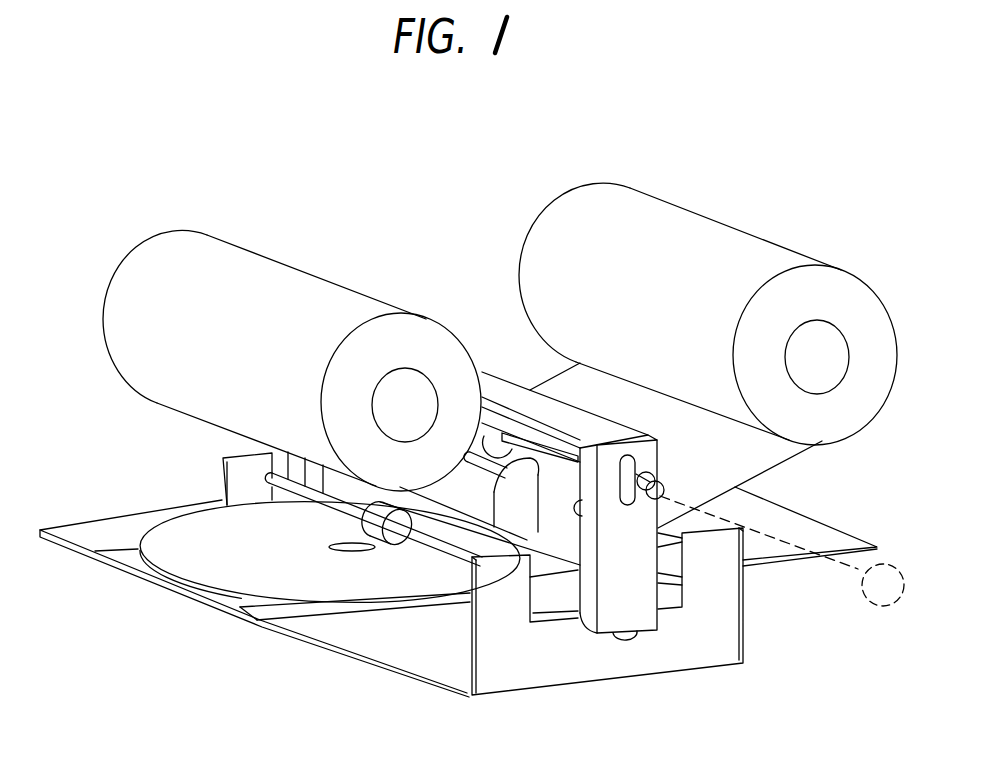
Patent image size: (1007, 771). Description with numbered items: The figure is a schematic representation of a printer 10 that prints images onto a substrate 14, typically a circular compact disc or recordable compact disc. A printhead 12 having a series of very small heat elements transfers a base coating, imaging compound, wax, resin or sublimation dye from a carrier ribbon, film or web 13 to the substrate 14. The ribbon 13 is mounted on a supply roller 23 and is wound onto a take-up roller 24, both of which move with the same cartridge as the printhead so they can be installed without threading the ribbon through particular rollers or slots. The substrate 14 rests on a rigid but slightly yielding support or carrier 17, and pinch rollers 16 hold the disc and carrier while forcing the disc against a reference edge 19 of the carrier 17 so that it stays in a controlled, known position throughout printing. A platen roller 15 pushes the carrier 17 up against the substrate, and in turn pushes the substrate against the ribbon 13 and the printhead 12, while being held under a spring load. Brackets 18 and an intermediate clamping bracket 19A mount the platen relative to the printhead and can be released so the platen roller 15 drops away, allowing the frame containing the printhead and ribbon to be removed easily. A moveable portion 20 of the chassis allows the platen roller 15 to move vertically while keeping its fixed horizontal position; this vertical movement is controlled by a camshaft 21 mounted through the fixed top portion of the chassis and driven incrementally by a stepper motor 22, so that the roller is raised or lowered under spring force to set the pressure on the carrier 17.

The printer 10 is at (445, 200).
The printhead 12 is at (523, 547).
The ribbon 13 is at (757, 467).
The substrate 14 is at (188, 528).
The platen roller 15 is at (563, 597).
The pinch rollers 16 is at (392, 538).
The carrier 17 is at (260, 612).
The brackets 18 is at (643, 618).
The reference edge 19 is at (138, 547).
The clamping bracket 19A is at (642, 620).
The moveable portion of the chassis 20 is at (528, 680).
The camshaft 21 is at (511, 383).
The stepper motor 22 is at (868, 607).
The supply roller 23 is at (405, 340).
The take-up roller 24 is at (848, 292).